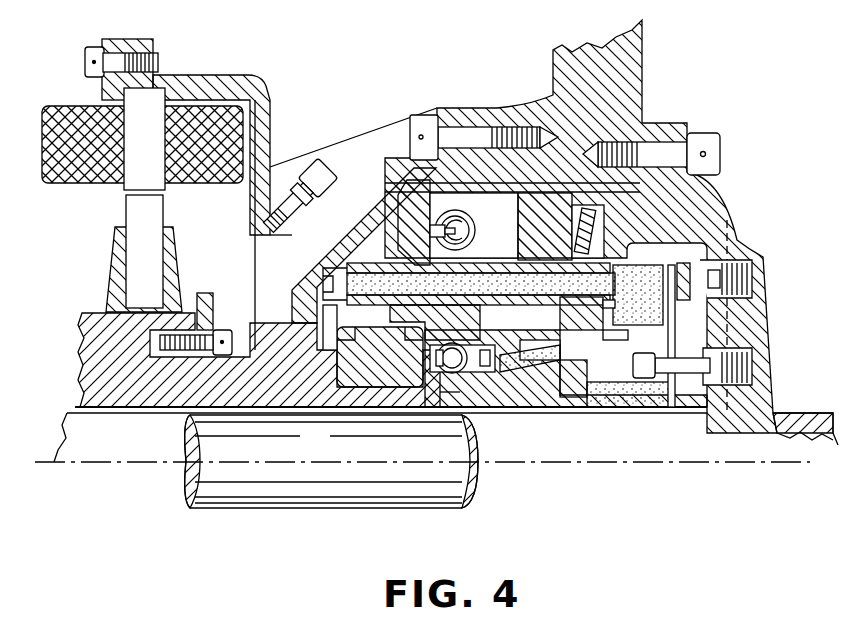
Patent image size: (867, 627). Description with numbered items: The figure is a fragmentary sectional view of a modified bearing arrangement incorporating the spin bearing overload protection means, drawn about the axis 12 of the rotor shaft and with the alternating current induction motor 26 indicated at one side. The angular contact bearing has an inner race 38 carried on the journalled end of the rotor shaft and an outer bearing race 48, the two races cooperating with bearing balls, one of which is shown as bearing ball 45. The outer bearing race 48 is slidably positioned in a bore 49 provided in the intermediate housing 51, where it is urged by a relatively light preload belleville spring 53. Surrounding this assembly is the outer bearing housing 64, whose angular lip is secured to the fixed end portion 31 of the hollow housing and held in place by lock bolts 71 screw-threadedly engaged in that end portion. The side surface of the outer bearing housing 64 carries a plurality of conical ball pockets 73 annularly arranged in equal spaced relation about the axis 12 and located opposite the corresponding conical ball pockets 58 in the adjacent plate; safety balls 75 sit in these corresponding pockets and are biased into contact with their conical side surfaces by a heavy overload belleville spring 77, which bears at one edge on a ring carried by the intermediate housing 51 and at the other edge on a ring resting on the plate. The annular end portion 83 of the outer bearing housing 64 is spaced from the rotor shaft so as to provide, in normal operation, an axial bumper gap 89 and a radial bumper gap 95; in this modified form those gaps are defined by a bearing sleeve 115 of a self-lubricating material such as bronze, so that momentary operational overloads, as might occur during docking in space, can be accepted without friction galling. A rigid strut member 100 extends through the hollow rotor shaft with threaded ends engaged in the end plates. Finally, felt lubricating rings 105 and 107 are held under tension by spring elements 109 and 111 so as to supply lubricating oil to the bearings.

The axis 12 is at (422, 462).
The alternating current induction motor 26 is at (112, 197).
The fixed end portion 31 is at (637, 72).
The inner race 38 is at (447, 392).
The bearing ball 45 is at (453, 374).
The outer bearing race 48 is at (466, 333).
The bore 49 is at (481, 284).
The intermediate housing 51 is at (499, 267).
The preload belleville spring 53 is at (594, 322).
The conical ball pockets 58 is at (470, 223).
The outer bearing housing 64 is at (410, 178).
The lock bolts 71 is at (704, 135).
The conical ball pockets 73 is at (436, 217).
The safety balls 75 is at (430, 232).
The overload belleville spring 77 is at (578, 233).
The annular end portion 83 is at (296, 303).
The axial bumper gap 89 is at (397, 318).
The radial bumper gap 95 is at (248, 355).
The rigid strut member 100 is at (330, 497).
The felt lubricating ring 105 is at (622, 400).
The felt lubricating ring 107 is at (392, 268).
The spring element 109 is at (404, 318).
The spring element 111 is at (750, 276).
The bearing sleeve 115 is at (380, 387).